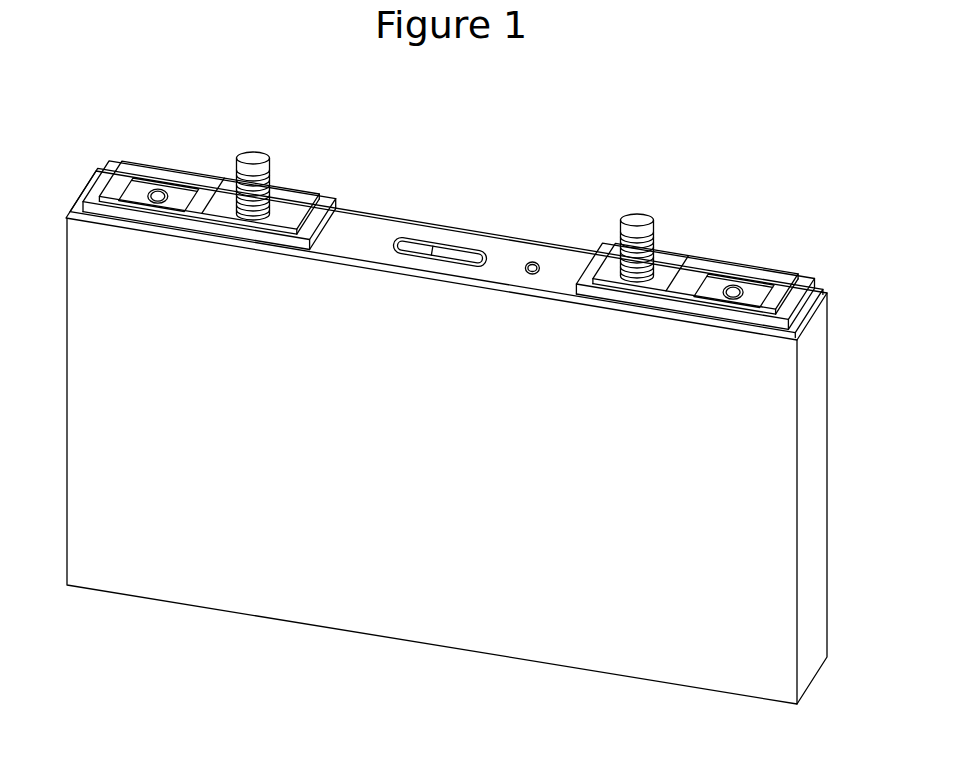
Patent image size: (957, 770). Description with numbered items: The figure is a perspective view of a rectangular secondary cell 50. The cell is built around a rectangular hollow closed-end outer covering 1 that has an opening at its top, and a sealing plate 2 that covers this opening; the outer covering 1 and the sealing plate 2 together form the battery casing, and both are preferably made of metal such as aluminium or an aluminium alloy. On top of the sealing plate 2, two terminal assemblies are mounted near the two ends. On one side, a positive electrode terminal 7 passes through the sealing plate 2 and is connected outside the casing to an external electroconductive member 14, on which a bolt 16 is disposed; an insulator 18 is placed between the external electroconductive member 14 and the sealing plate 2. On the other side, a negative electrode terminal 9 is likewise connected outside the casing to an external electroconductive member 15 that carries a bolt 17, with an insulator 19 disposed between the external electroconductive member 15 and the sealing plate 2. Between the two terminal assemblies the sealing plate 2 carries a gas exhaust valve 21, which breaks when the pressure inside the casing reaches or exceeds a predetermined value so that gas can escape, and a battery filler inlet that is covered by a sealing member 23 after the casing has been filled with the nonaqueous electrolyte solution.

The secondary cell 50 is at (409, 79).
The outer covering 1 is at (600, 620).
The sealing plate 2 is at (446, 248).
The positive electrode terminal 7 is at (742, 278).
The negative electrode terminal 9 is at (157, 190).
The external electroconductive member 14 is at (695, 259).
The external electroconductive member 15 is at (209, 175).
The bolt 16 is at (638, 219).
The bolt 17 is at (253, 156).
The insulator 18 is at (793, 277).
The insulator 19 is at (92, 177).
The gas exhaust valve 21 is at (458, 257).
The sealing member 23 is at (532, 263).